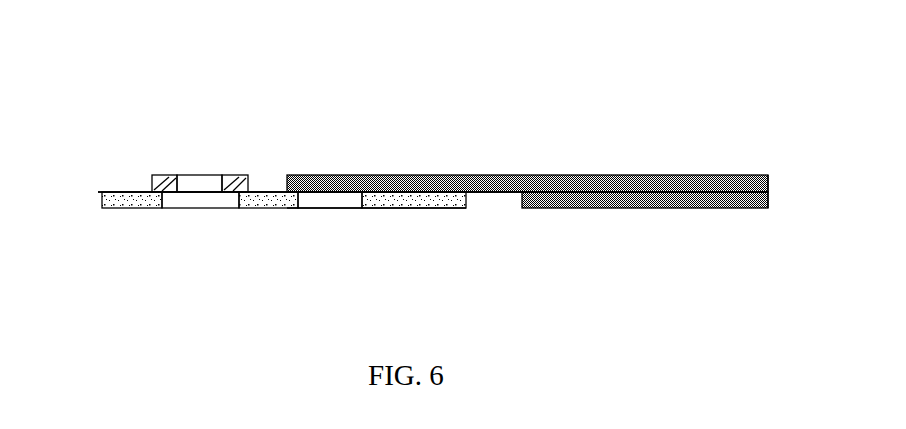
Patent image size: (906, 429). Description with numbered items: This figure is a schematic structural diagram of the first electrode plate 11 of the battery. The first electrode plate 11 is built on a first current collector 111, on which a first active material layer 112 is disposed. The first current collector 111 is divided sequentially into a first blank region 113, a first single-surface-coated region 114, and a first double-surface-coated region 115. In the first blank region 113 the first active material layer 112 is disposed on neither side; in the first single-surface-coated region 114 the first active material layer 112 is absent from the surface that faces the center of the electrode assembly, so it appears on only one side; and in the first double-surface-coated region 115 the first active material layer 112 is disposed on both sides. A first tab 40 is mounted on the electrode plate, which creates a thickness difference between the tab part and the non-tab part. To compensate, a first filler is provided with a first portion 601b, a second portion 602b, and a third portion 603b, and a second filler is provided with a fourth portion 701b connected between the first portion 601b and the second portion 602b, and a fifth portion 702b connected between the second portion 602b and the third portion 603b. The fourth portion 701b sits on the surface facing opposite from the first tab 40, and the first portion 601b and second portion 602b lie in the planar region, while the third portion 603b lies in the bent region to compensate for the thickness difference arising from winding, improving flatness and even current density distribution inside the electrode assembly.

The first electrode plate 11 is at (304, 80).
The first tab 40 is at (200, 180).
The first current collector 111 is at (572, 190).
The first active material layer 112 is at (487, 183).
The first blank region 113 is at (95, 215).
The first single-surface-coated region 114 is at (472, 222).
The first double-surface-coated region 115 is at (683, 160).
The first portion 601b is at (136, 192).
The second portion 602b is at (269, 201).
The third portion 603b is at (412, 208).
The fourth portion 701b is at (197, 208).
The fifth portion 702b is at (323, 208).